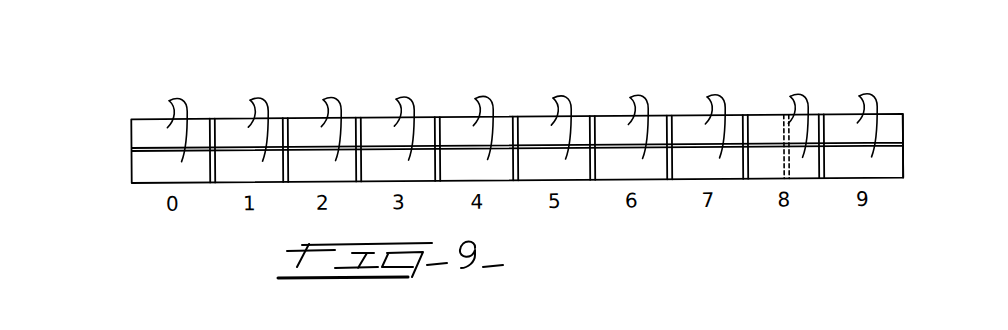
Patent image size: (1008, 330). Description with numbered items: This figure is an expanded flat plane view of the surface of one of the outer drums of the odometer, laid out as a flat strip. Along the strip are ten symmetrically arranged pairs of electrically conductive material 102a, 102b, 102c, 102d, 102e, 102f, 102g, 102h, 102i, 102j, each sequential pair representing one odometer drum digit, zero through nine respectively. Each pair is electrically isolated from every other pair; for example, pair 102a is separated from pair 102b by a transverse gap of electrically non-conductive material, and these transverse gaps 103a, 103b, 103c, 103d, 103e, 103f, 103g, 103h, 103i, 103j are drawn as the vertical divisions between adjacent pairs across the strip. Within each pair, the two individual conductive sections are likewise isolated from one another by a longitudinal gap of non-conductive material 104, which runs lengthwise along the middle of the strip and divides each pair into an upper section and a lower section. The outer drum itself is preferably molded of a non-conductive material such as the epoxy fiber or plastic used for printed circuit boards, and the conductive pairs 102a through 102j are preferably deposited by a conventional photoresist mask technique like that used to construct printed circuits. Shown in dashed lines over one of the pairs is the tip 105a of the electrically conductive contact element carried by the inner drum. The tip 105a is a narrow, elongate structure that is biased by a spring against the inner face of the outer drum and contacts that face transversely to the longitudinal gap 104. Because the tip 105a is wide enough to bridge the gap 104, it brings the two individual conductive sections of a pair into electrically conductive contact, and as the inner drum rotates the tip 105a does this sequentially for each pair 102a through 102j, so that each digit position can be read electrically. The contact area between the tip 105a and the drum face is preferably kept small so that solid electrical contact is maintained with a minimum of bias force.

The pair of electrically conductive material 102a is at (159, 126).
The pair of electrically conductive material 102b is at (240, 125).
The pair of electrically conductive material 102c is at (313, 125).
The pair of electrically conductive material 102d is at (386, 124).
The pair of electrically conductive material 102e is at (465, 123).
The pair of electrically conductive material 102f is at (543, 123).
The pair of electrically conductive material 102g is at (620, 122).
The pair of electrically conductive material 102h is at (697, 122).
The pair of electrically conductive material 102i is at (778, 121).
The pair of electrically conductive material 102j is at (849, 121).
The transverse gap of electrically non-conductive material 103a is at (212, 119).
The transverse gap of electrically non-conductive material 103b is at (286, 119).
The transverse gap of electrically non-conductive material 103c is at (358, 119).
The transverse gap of electrically non-conductive material 103d is at (438, 119).
The transverse gap of electrically non-conductive material 103e is at (516, 119).
The transverse gap of electrically non-conductive material 103f is at (592, 119).
The transverse gap of electrically non-conductive material 103g is at (670, 119).
The transverse gap of electrically non-conductive material 103h is at (746, 119).
The transverse gap of electrically non-conductive material 103i is at (822, 119).
The transverse gap of electrically non-conductive material 103j is at (903, 119).
The longitudinal gap of non-conductive material 104 is at (132, 151).
The tip 105a is at (780, 164).